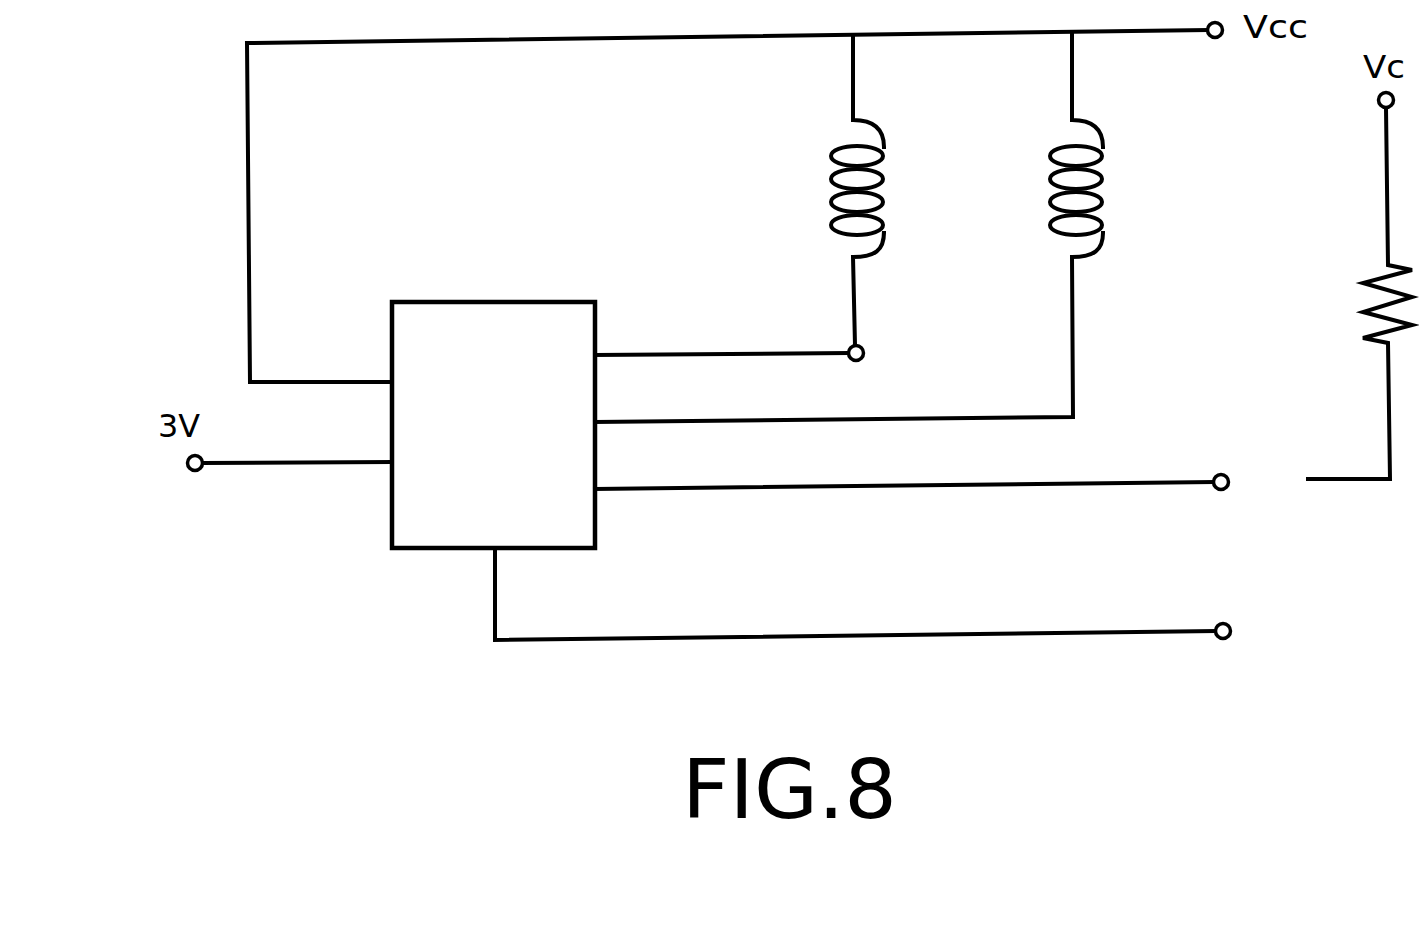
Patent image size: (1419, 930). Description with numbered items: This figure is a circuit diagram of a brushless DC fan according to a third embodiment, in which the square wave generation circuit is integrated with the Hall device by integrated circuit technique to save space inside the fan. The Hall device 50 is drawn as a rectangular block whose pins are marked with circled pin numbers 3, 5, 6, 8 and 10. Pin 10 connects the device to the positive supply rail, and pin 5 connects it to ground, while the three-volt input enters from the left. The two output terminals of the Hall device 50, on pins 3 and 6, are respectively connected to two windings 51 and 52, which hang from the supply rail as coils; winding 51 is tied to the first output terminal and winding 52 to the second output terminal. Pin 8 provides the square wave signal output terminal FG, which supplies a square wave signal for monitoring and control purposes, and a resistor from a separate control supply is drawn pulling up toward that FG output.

The Hall device 50 is at (493, 369).
The winding 51 is at (890, 190).
The winding 52 is at (1112, 144).
The Hall IC pin 3 (OUT1 / L1) 3 is at (760, 356).
The Hall IC pin 5 (GND) 5 is at (869, 598).
The Hall IC pin 6 (OUT2) 6 is at (834, 368).
The Hall IC pin 8 (FG output) 8 is at (922, 484).
The Hall IC pin 10 (Vcc) 10 is at (319, 212).